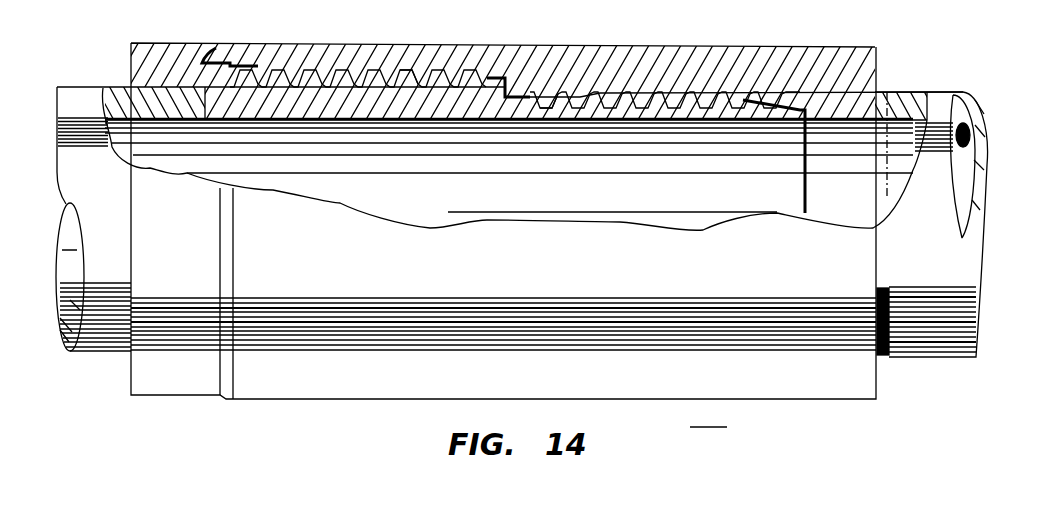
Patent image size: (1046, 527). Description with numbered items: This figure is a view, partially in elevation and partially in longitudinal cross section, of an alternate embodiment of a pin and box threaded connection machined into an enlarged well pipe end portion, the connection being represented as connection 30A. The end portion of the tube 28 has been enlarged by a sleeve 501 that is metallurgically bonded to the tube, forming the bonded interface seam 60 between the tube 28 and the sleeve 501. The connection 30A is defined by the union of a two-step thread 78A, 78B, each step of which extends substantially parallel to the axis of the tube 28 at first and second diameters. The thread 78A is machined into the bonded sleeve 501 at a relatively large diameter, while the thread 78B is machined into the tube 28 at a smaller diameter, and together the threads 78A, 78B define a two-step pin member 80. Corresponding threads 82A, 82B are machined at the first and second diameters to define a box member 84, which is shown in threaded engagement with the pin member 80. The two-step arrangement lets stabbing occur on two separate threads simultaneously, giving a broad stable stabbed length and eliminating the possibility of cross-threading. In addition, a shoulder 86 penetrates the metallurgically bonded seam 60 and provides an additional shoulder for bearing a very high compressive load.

The sleeve 501 is at (760, 47).
The connection 30A is at (532, 257).
The tube 28 is at (112, 340).
The metallurgically bonded interface seam 60 is at (145, 70).
The box member 84 is at (255, 44).
The thread 82A is at (412, 70).
The thread 82B is at (558, 100).
The thread 78A is at (360, 70).
The thread 78B is at (548, 100).
The shoulder 86 is at (470, 118).
The two-step pin member 80 is at (786, 115).